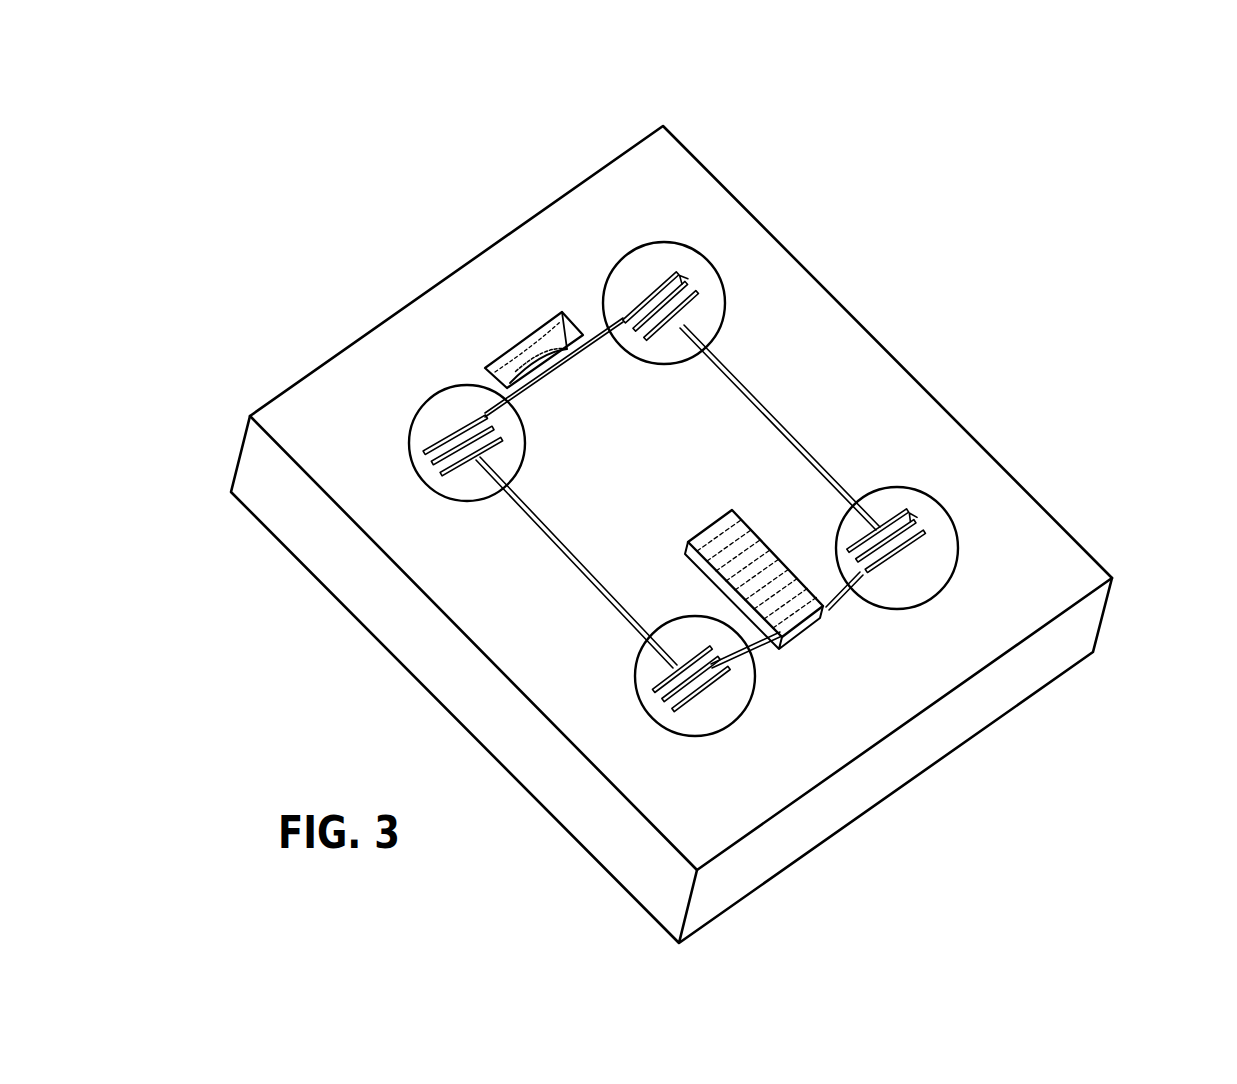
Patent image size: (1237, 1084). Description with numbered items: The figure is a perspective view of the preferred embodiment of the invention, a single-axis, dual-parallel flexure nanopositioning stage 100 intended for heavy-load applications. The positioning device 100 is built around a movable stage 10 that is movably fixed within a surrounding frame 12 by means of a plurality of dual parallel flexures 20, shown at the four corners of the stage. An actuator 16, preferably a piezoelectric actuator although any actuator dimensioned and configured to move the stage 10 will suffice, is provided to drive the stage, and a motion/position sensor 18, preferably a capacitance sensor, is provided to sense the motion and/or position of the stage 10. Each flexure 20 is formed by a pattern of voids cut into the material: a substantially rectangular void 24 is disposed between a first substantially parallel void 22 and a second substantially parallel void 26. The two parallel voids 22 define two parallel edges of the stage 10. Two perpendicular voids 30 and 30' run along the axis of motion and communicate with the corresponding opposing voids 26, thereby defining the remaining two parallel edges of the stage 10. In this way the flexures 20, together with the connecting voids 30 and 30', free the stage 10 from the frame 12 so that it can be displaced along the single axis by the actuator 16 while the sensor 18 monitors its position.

The nanopositioning stage 100 is at (1033, 177).
The movable stage 10 is at (666, 452).
The frame 12 is at (836, 368).
The actuator 16 is at (793, 617).
The motion/position sensor 18 is at (515, 348).
The dual parallel flexure 20 is at (703, 252).
The first substantially parallel void 22 is at (637, 293).
The substantially rectangular void 24 is at (680, 297).
The second substantially parallel void 26 is at (700, 298).
The perpendicular void 30 is at (867, 402).
The perpendicular void 30' is at (515, 628).